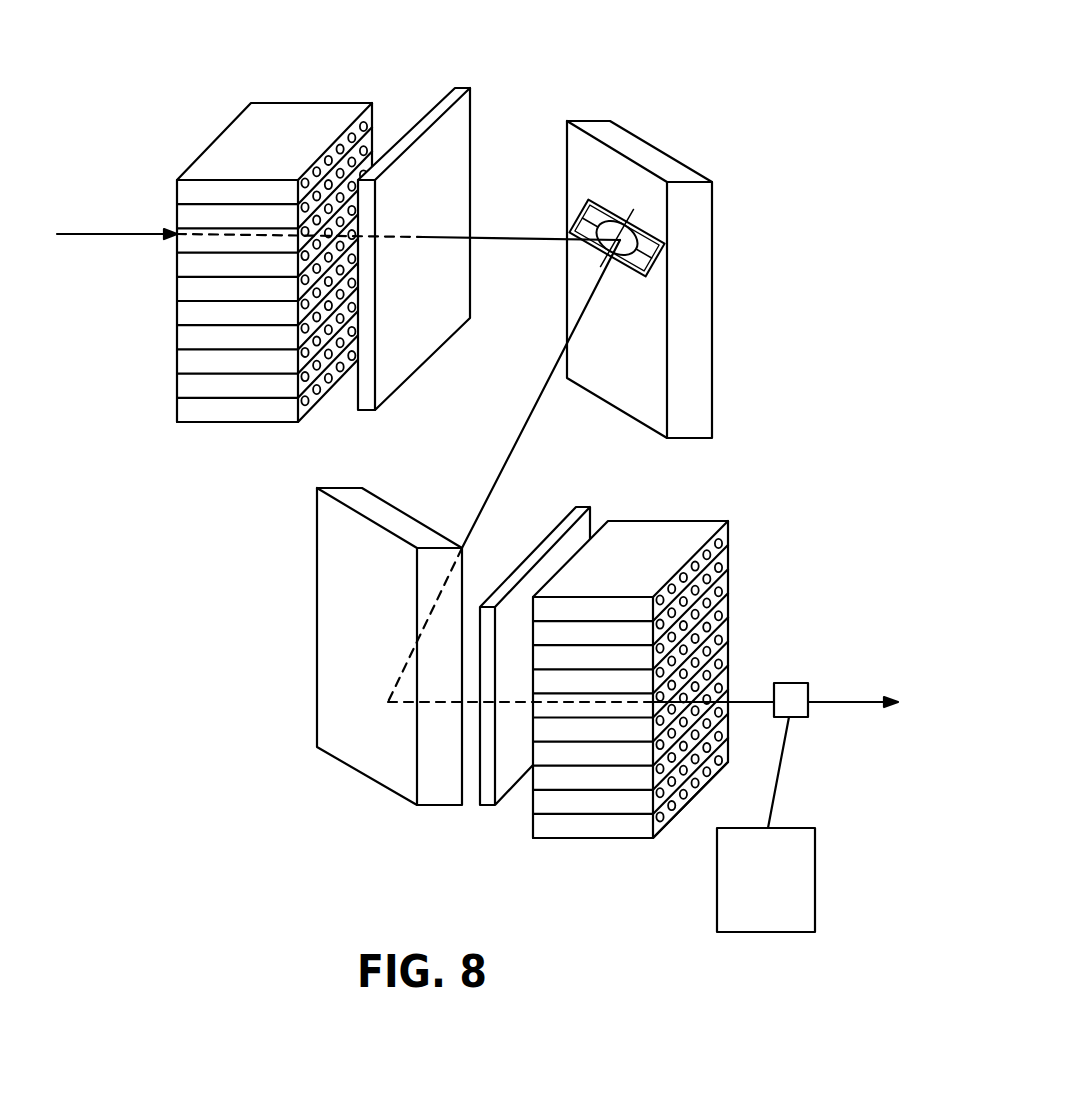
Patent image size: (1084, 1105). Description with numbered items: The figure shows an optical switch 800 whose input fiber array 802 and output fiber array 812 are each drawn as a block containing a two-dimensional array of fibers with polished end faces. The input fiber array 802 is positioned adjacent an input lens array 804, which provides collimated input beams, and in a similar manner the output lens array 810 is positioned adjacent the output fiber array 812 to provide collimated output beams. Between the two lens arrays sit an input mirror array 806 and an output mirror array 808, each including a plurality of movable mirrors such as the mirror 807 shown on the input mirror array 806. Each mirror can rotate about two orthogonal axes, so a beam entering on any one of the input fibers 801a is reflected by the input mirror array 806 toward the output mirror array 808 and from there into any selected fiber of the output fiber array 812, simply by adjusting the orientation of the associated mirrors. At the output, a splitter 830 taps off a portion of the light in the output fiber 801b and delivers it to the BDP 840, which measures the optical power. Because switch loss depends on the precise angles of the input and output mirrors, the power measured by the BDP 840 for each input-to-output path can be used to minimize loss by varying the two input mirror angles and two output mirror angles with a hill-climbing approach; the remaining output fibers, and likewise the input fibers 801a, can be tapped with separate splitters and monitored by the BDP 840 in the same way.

The optical switch 800 is at (676, 64).
The input fibers 801a is at (90, 236).
The output fiber 801b is at (848, 705).
The input fiber array 802 is at (288, 108).
The input lens array 804 is at (457, 90).
The input mirror array 806 is at (713, 273).
The mirror 807 is at (637, 255).
The output mirror array 808 is at (343, 694).
The output lens array 810 is at (575, 505).
The output fiber array 812 is at (713, 525).
The splitter 830 is at (792, 690).
The BDP 840 is at (746, 909).